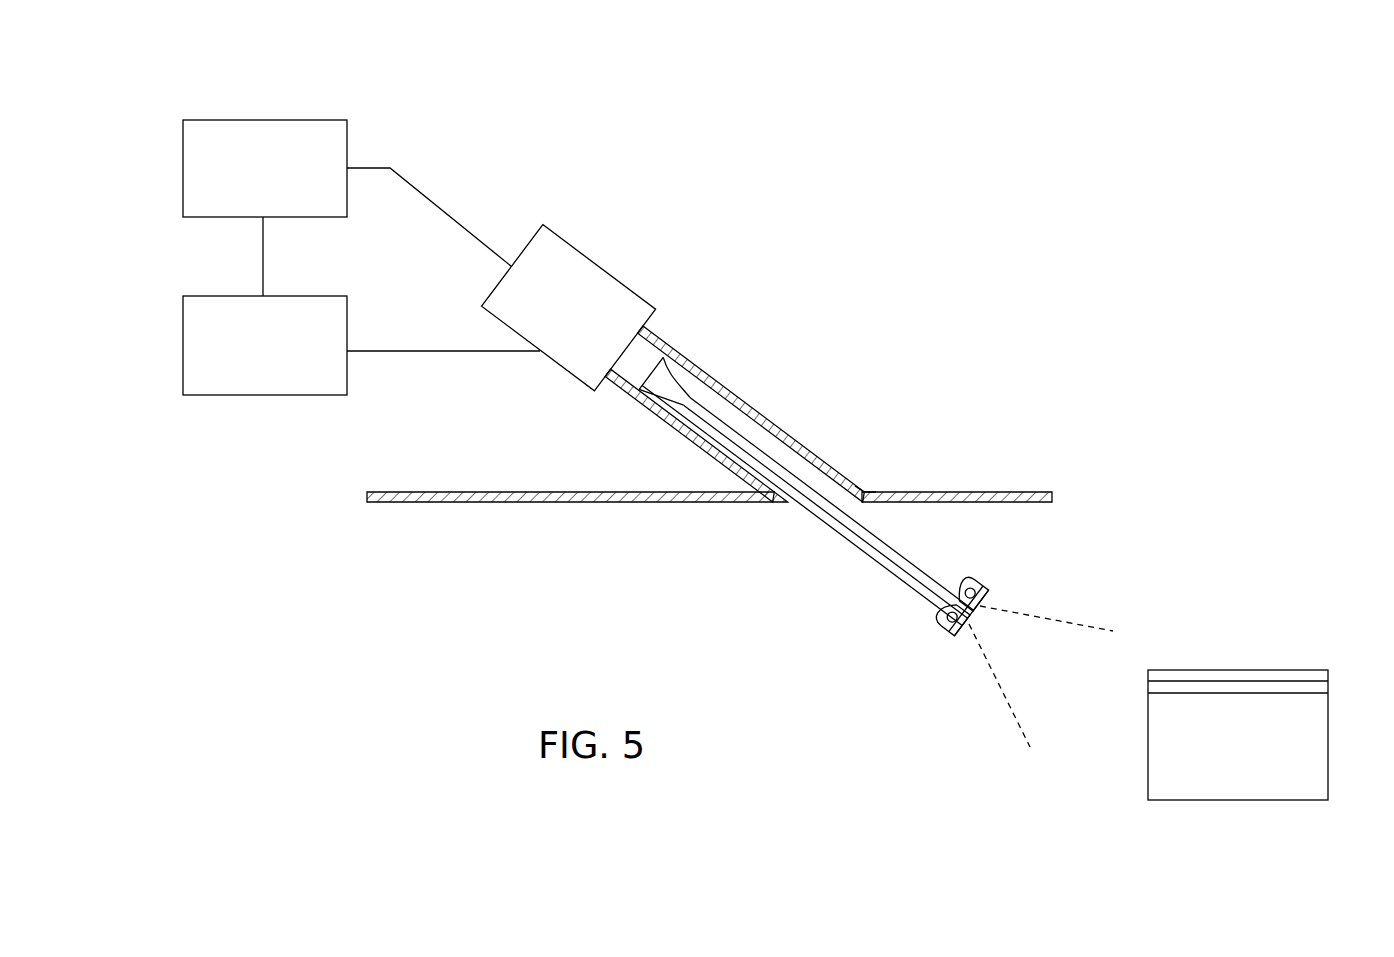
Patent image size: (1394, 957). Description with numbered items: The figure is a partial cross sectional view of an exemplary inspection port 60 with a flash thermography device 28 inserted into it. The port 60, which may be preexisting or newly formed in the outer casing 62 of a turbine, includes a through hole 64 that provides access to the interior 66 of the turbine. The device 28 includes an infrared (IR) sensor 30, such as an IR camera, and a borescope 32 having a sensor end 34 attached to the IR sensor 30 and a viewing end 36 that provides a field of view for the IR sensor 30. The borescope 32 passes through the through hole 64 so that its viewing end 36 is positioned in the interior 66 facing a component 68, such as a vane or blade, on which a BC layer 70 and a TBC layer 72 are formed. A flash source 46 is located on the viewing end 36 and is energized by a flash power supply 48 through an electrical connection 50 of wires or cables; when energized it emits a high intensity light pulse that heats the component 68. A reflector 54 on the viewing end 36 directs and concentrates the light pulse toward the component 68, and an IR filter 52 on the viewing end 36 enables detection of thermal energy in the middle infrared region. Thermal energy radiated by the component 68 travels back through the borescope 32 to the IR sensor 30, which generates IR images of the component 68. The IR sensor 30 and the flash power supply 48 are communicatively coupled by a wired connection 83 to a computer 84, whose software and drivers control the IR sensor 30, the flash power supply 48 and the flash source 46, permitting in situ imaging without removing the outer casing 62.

The flash thermography device 28 is at (1057, 376).
The infrared (IR) sensor 30 is at (590, 252).
The borescope 32 is at (720, 420).
The sensor end 34 is at (694, 352).
The viewing end 36 is at (1022, 562).
The flash source 46 is at (946, 628).
The flash power supply 48 is at (245, 396).
The electrical connection 50 is at (461, 352).
The IR filter 52 is at (959, 642).
The reflector 54 is at (931, 610).
The inspection port 60 is at (800, 414).
The outer casing 62 is at (1000, 491).
The through hole 64 is at (848, 484).
The interior 66 is at (619, 592).
The component 68 is at (1262, 801).
The BC layer 70 is at (1315, 688).
The TBC layer 72 is at (1308, 677).
The wired connection 83 is at (410, 172).
The computer 84 is at (263, 120).